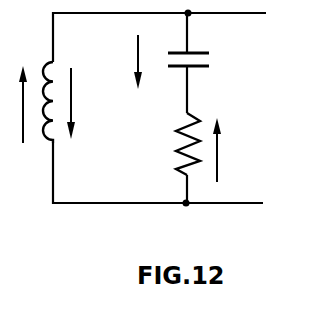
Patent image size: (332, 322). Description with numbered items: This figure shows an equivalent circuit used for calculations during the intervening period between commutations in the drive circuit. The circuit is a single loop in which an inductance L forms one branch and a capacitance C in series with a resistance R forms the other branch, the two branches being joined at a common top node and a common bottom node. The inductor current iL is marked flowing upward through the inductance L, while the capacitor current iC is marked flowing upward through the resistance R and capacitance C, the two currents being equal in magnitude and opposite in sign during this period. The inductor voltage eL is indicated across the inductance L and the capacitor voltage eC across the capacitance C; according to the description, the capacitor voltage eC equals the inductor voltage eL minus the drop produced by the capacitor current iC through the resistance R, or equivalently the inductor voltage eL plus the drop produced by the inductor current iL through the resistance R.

The inductance L is at (35, 88).
The capacitance C is at (198, 64).
The resistance R is at (177, 144).
The inductor current iL is at (20, 127).
The capacitor current iC is at (227, 150).
The inductor voltage eL is at (82, 103).
The capacitor voltage eC is at (122, 62).